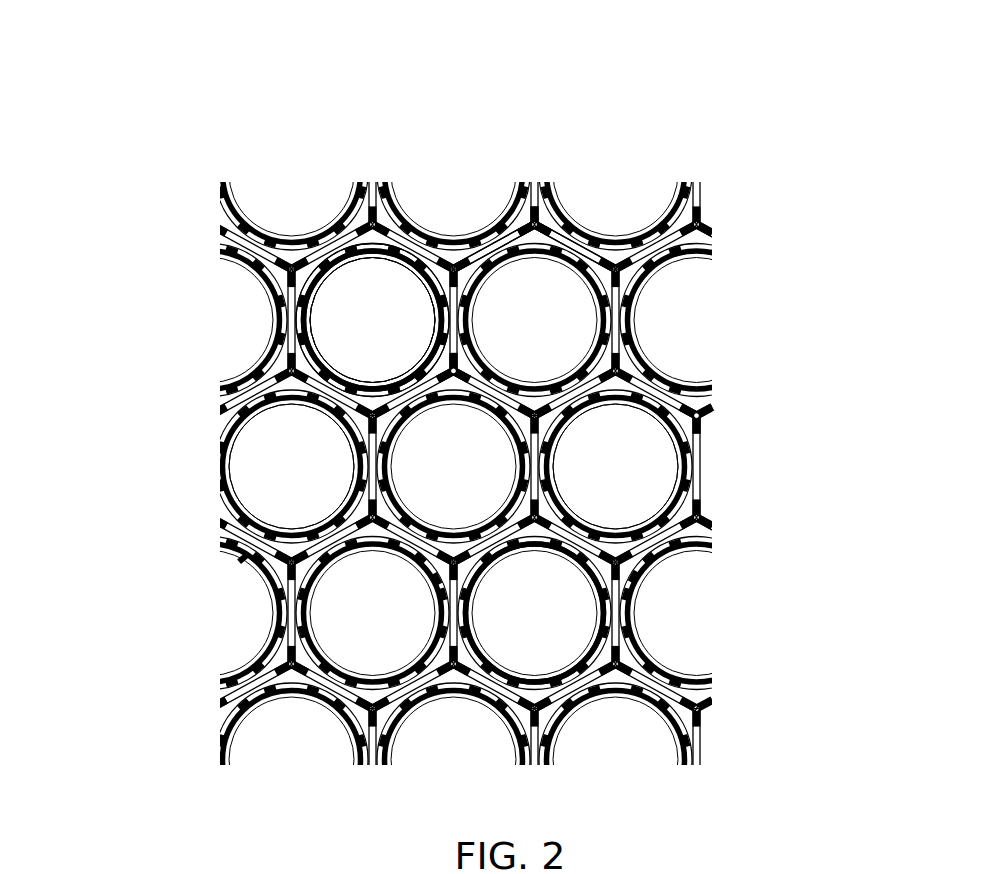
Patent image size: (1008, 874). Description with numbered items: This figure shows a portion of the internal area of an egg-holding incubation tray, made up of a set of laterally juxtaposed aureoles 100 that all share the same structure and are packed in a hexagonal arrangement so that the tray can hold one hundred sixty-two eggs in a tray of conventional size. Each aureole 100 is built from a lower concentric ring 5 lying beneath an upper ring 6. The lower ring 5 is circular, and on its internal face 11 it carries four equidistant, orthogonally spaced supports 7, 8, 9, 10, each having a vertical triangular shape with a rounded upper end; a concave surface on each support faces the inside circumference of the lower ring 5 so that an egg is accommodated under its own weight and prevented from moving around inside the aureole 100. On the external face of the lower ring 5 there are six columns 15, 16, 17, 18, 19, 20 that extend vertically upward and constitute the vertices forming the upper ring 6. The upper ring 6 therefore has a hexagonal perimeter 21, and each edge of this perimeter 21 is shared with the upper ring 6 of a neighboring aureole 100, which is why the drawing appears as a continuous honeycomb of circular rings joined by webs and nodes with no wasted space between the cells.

The aureole 100 is at (372, 303).
The internal face 11 is at (546, 222).
The support 7 is at (477, 235).
The support 8 is at (588, 233).
The support 9 is at (620, 347).
The support 10 is at (460, 357).
The column 20 is at (680, 418).
The column 19 is at (567, 430).
The column 18 is at (567, 527).
The upper ring 6 is at (630, 577).
The lower concentric ring 5 is at (470, 613).
The hexagonal perimeter 21 is at (372, 327).
The column 15 is at (342, 435).
The column 16 is at (240, 566).
The column 17 is at (440, 580).